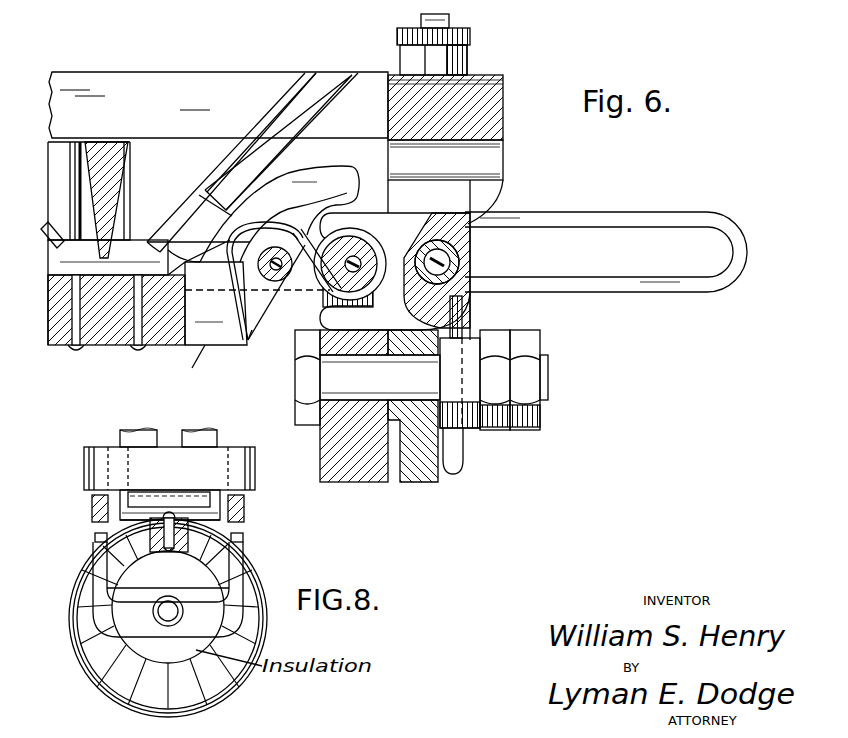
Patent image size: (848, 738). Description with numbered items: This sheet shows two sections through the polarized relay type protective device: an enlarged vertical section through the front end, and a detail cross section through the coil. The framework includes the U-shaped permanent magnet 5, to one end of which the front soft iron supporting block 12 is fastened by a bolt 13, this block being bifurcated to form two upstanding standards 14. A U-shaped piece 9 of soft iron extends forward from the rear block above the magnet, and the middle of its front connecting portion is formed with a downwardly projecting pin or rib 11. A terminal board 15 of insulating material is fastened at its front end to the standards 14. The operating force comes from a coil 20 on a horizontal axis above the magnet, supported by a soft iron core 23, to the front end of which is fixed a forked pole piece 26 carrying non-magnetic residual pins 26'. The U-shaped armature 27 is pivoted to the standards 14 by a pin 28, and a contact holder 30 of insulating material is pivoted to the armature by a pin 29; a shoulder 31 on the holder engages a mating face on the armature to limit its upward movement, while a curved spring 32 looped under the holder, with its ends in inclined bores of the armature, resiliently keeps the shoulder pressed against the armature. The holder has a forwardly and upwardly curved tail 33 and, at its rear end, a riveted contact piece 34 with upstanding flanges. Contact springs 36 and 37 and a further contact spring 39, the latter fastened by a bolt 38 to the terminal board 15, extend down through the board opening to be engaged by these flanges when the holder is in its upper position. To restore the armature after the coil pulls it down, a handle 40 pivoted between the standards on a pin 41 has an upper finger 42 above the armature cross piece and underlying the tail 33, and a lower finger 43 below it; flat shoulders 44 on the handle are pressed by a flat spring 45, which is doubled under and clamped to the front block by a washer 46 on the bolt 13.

In FIG. 6, the permanent magnet 5 is at (362, 475).
In FIG. 6, the U-shaped piece of soft iron 9 is at (62, 174).
In FIG. 8, the U-shaped piece of soft iron 9 is at (169, 468).
In FIG. 6, the downwardly projecting pin or rib 11 is at (100, 246).
In FIG. 8, the downwardly projecting pin or rib 11 is at (170, 505).
In FIG. 6, the front soft iron supporting block 12 is at (428, 480).
In FIG. 6, the bolt 13 is at (421, 380).
In FIG. 6, the upstanding lugs or standards 14 is at (405, 162).
In FIG. 6, the terminal board 15 is at (95, 98).
In FIG. 8, the coil 20 is at (108, 692).
In FIG. 8, the soft iron core 23 is at (176, 611).
In FIG. 8, the forked pole piece 26 is at (142, 612).
In FIG. 8, the residual pins 26' is at (169, 548).
In FIG. 6, the armature 27 is at (203, 242).
In FIG. 8, the armature 27 is at (92, 511).
In FIG. 6, the pin 28 is at (372, 247).
In FIG. 6, the pin 29 is at (264, 276).
In FIG. 6, the contact holder 30 is at (228, 326).
In FIG. 8, the contact holder 30 is at (188, 540).
In FIG. 6, the shoulder 31 is at (306, 238).
In FIG. 6, the curved spring 32 is at (253, 321).
In FIG. 6, the curved tail 33 is at (343, 170).
In FIG. 6, the contact piece 34 is at (118, 272).
In FIG. 8, the contact piece 34 is at (244, 510).
In FIG. 8, the contact spring 36 is at (200, 436).
In FIG. 6, the contact spring 37 is at (46, 226).
In FIG. 8, the contact spring 37 is at (146, 434).
In FIG. 6, the bolt 38 is at (456, 30).
In FIG. 6, the contact spring 39 is at (277, 120).
In FIG. 6, the handle 40 is at (606, 252).
In FIG. 6, the pin 41 is at (462, 262).
In FIG. 6, the upper finger 42 is at (357, 222).
In FIG. 6, the lower finger 43 is at (340, 320).
In FIG. 6, the flat shoulders 44 is at (470, 208).
In FIG. 6, the flat spring 45 is at (464, 462).
In FIG. 6, the washer 46 is at (474, 340).